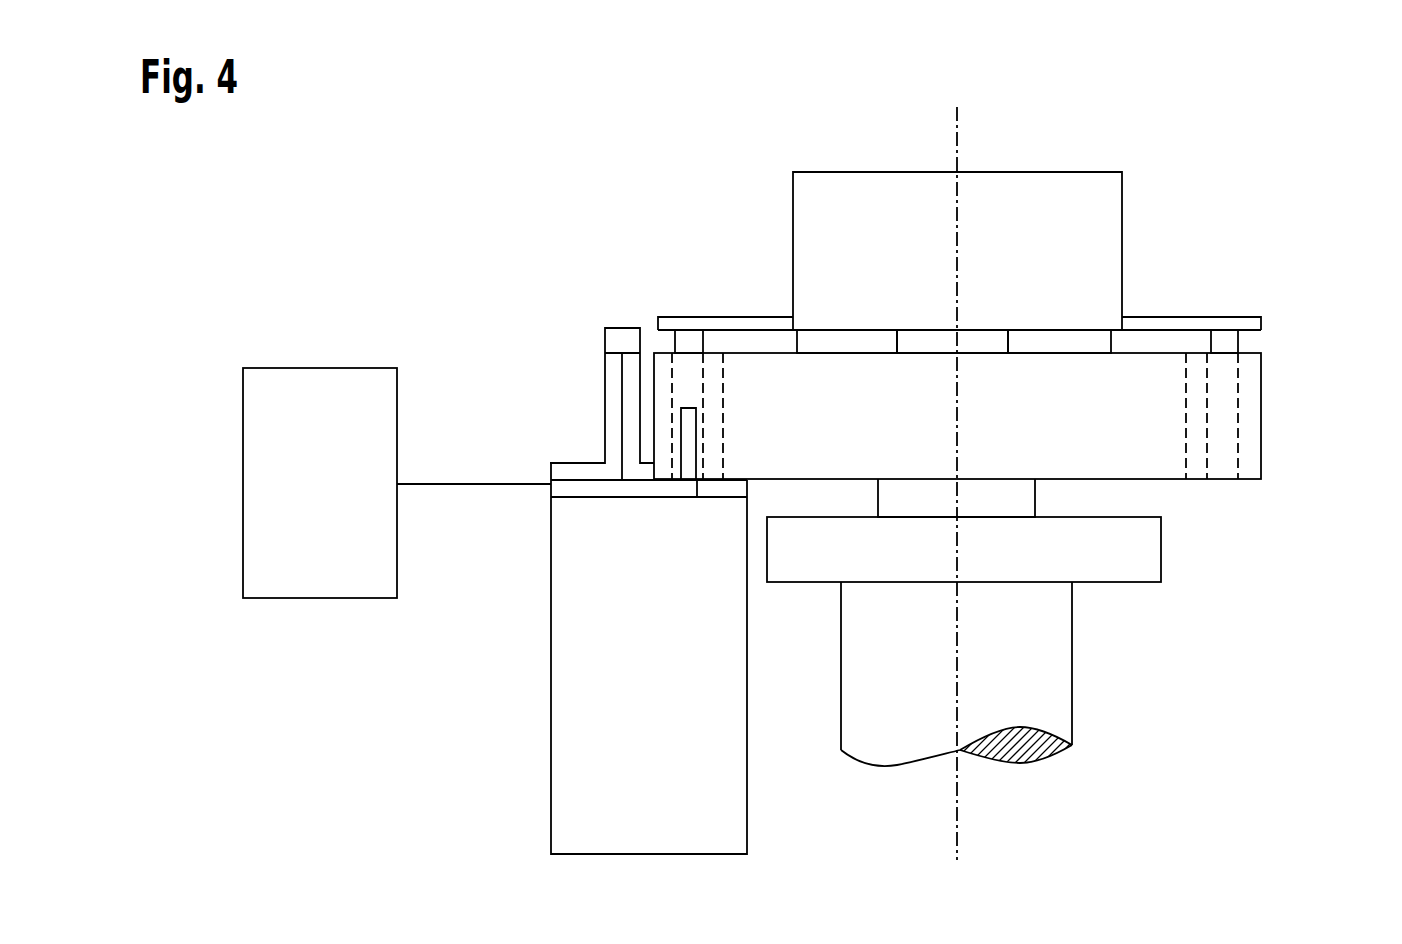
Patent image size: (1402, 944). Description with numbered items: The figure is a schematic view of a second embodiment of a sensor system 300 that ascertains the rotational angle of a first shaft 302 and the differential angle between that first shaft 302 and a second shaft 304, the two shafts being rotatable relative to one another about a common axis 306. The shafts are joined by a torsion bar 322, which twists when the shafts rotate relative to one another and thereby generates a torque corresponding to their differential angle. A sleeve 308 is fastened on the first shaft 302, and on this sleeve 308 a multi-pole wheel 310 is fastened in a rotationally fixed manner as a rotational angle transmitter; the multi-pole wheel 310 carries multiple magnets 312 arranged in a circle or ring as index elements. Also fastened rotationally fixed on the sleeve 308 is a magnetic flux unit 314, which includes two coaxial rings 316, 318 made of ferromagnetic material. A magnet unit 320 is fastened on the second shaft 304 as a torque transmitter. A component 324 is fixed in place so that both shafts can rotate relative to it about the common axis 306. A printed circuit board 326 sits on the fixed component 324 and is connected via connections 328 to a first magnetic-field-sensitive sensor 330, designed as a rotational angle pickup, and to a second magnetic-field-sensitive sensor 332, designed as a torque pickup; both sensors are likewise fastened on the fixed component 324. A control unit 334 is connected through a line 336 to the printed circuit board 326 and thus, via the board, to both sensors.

The sensor system 300 is at (442, 248).
The first shaft 302 is at (1100, 223).
The second shaft 304 is at (1060, 693).
The common axis 306 is at (955, 150).
The sleeve 308 is at (685, 323).
The multi-pole wheel 310 is at (1263, 339).
The magnets 312 is at (845, 340).
The magnetic flux unit 314 is at (1272, 438).
The ring 316 is at (1201, 485).
The ring 318 is at (1263, 485).
The magnet unit 320 is at (1148, 593).
The torsion bar 322 is at (1042, 500).
The component 324 is at (678, 701).
The printed circuit board 326 is at (608, 498).
The connections 328 is at (622, 403).
The first magnetic-field-sensitive sensor 330 is at (623, 320).
The second magnetic-field-sensitive sensor 332 is at (688, 428).
The control unit 334 is at (333, 509).
The line 336 is at (470, 484).